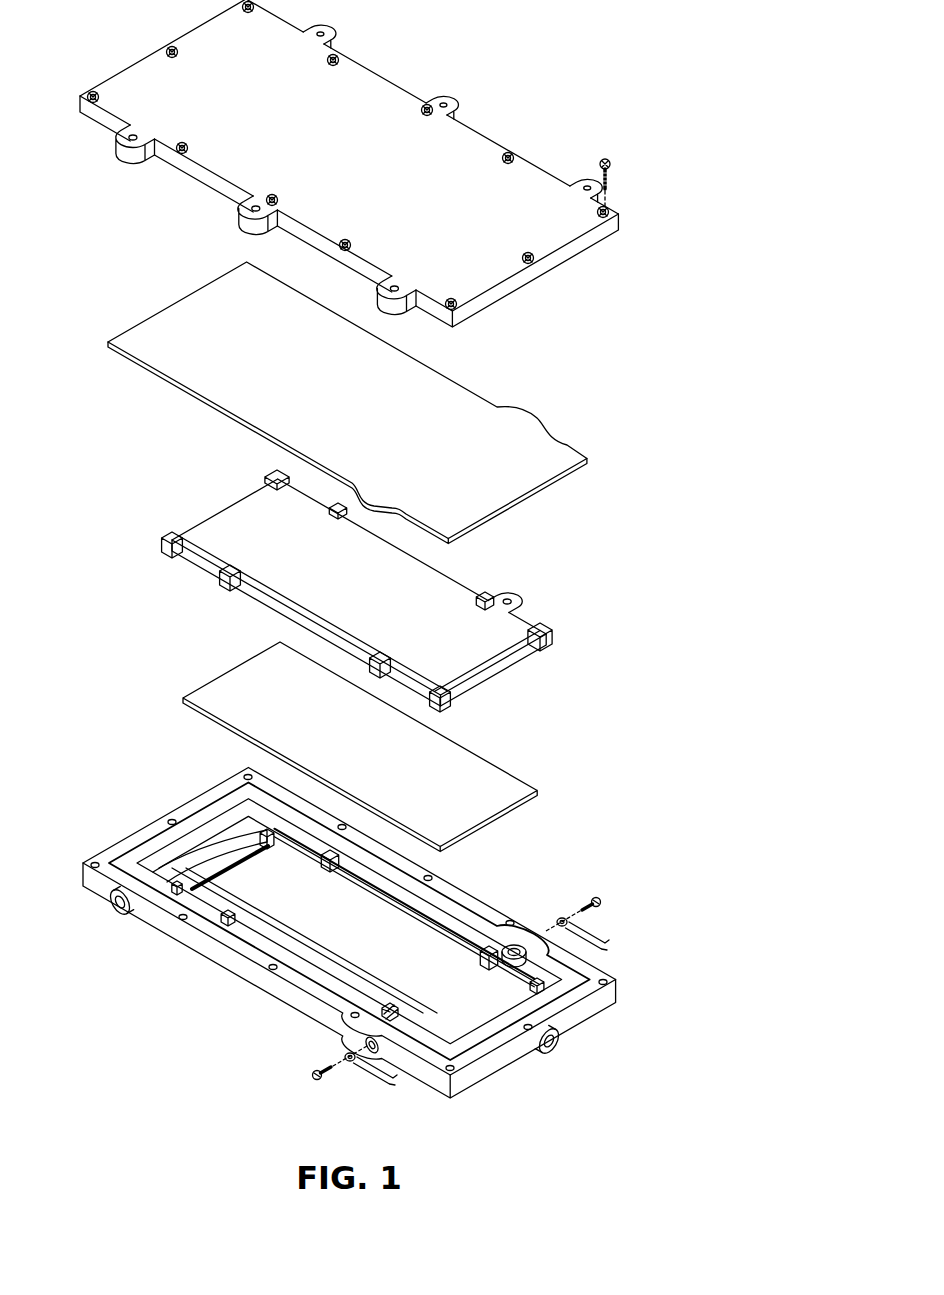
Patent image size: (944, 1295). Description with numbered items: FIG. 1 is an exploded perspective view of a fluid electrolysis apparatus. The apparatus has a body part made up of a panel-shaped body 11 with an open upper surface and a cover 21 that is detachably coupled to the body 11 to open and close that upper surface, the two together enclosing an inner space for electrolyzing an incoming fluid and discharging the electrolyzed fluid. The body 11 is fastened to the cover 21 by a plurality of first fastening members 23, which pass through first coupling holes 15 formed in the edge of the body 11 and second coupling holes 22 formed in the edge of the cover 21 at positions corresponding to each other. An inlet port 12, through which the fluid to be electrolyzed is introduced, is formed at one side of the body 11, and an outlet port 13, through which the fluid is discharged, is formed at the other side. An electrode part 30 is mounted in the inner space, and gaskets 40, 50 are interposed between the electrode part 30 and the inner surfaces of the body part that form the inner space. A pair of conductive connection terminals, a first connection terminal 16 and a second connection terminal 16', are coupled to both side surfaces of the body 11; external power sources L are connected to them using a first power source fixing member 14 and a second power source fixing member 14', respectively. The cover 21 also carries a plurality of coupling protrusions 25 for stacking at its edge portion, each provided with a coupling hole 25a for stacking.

The body 11 is at (218, 958).
The inlet port 12 is at (108, 905).
The outlet port 13 is at (562, 1043).
The first power source fixing member 14 is at (570, 899).
The second power source fixing member 14' is at (310, 1065).
The first coupling holes 15 is at (83, 862).
The first connection terminal 16 is at (483, 963).
The second connection terminal 16' is at (337, 1029).
The cover 21 is at (375, 82).
The second coupling holes 22 is at (618, 207).
The first fastening members 23 is at (613, 164).
The coupling protrusions for stacking 25 is at (132, 172).
The coupling hole for stacking 25a is at (118, 146).
The electrode part 30 is at (549, 600).
The gasket 40 is at (490, 775).
The gasket 50 is at (556, 440).
The external power sources L is at (604, 946).